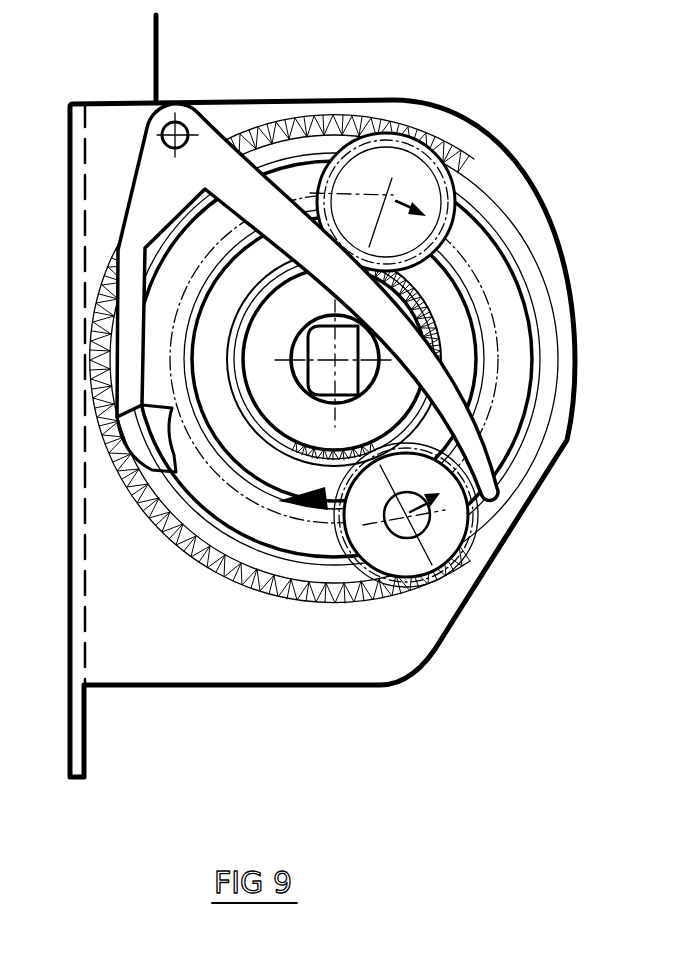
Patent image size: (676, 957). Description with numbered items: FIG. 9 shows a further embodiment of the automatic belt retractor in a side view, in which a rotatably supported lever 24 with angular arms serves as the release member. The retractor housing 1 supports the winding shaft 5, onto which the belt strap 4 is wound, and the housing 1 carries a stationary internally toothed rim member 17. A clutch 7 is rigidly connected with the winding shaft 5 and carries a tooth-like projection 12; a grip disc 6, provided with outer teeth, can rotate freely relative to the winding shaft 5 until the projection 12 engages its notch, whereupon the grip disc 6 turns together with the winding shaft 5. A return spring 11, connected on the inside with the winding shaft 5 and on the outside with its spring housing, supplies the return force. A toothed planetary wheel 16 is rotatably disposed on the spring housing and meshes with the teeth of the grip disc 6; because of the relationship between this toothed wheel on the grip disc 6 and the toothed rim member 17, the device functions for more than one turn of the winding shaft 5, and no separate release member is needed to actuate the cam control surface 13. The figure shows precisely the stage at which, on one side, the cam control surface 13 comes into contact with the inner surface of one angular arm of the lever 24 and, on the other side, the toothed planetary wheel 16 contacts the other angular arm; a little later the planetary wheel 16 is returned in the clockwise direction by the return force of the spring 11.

The retractor housing 1 is at (440, 119).
The belt strap 4 is at (158, 53).
The winding shaft 5 is at (347, 354).
The grip disc 6 is at (396, 393).
The clutch 7 is at (498, 298).
The return spring 11 is at (510, 257).
The tooth-like projection 12 is at (312, 522).
The cam control surface 13 is at (114, 456).
The toothed planetary wheel 16 is at (455, 193).
The toothed rim member 17 is at (380, 125).
The lever 24 is at (207, 137).